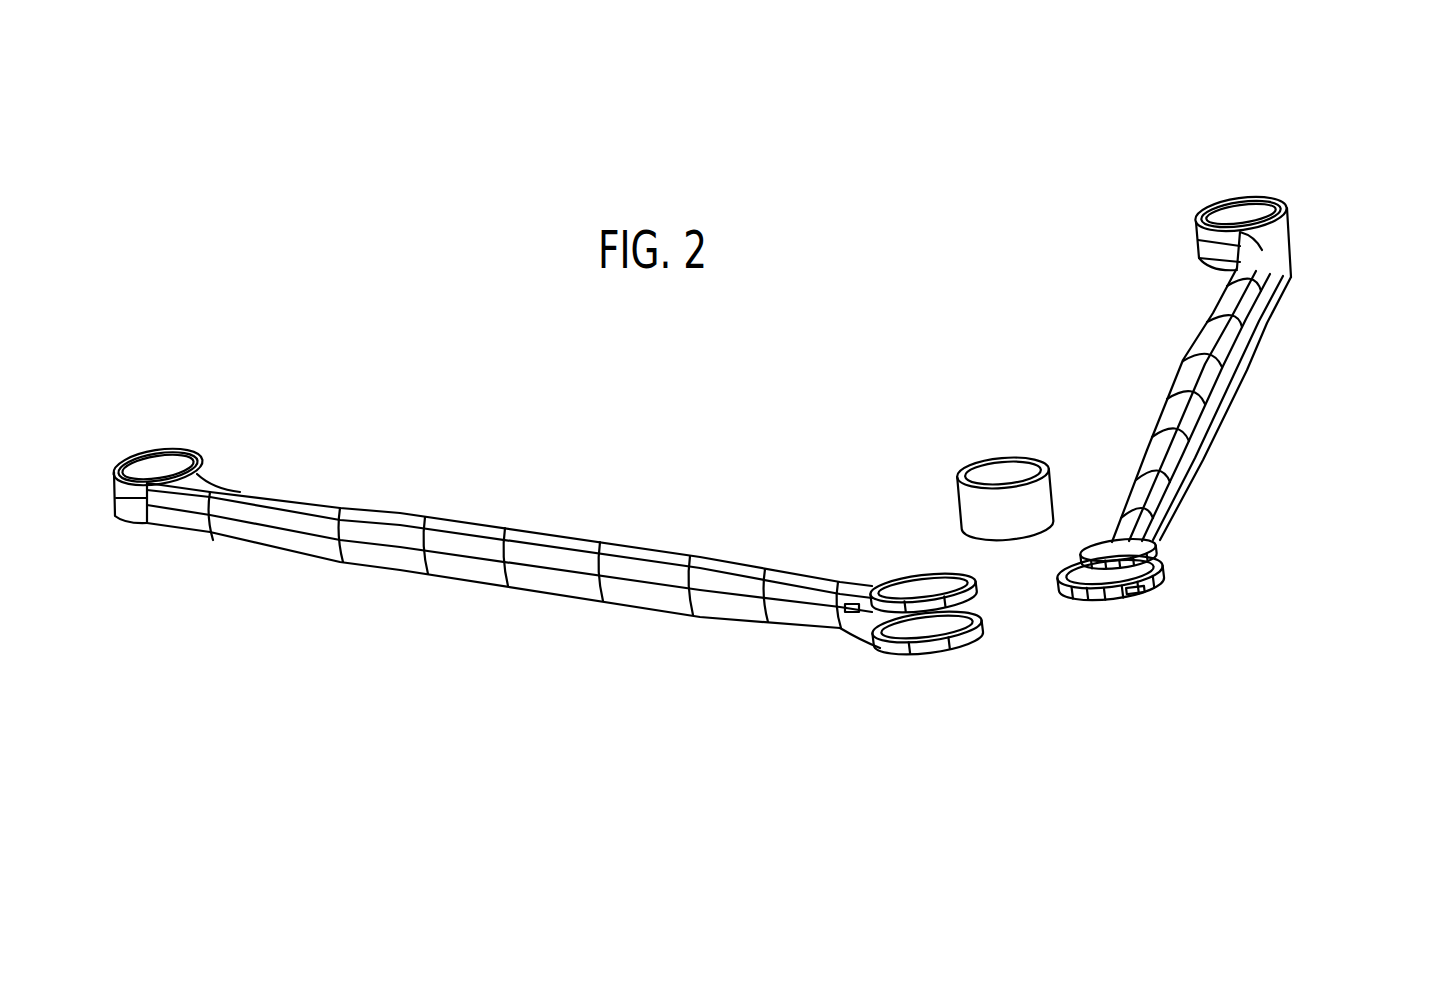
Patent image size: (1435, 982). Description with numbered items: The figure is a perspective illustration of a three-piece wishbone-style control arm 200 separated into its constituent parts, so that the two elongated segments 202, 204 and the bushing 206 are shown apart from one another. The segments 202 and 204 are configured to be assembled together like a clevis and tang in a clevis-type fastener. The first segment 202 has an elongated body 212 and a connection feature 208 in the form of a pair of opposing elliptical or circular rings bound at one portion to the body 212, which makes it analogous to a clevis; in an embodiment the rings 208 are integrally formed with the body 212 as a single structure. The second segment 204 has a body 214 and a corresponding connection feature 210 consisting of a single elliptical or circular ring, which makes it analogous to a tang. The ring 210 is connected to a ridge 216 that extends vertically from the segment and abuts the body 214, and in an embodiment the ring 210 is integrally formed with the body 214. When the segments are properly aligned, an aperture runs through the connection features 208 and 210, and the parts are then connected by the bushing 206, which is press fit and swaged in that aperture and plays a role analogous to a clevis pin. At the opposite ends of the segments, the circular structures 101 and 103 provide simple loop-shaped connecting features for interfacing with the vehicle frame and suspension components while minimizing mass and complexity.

The circular structure 101 is at (165, 447).
The circular structure 103 is at (1230, 198).
The three-piece wishbone-style control arm 200 is at (590, 455).
The segment 202 is at (774, 645).
The segment 204 is at (1318, 327).
The bushing 206 is at (1020, 528).
The connection feature 208 is at (940, 660).
The connection feature 210 is at (1145, 597).
The body 212 is at (435, 572).
The body 214 is at (1233, 413).
The ridge 216 is at (1088, 545).